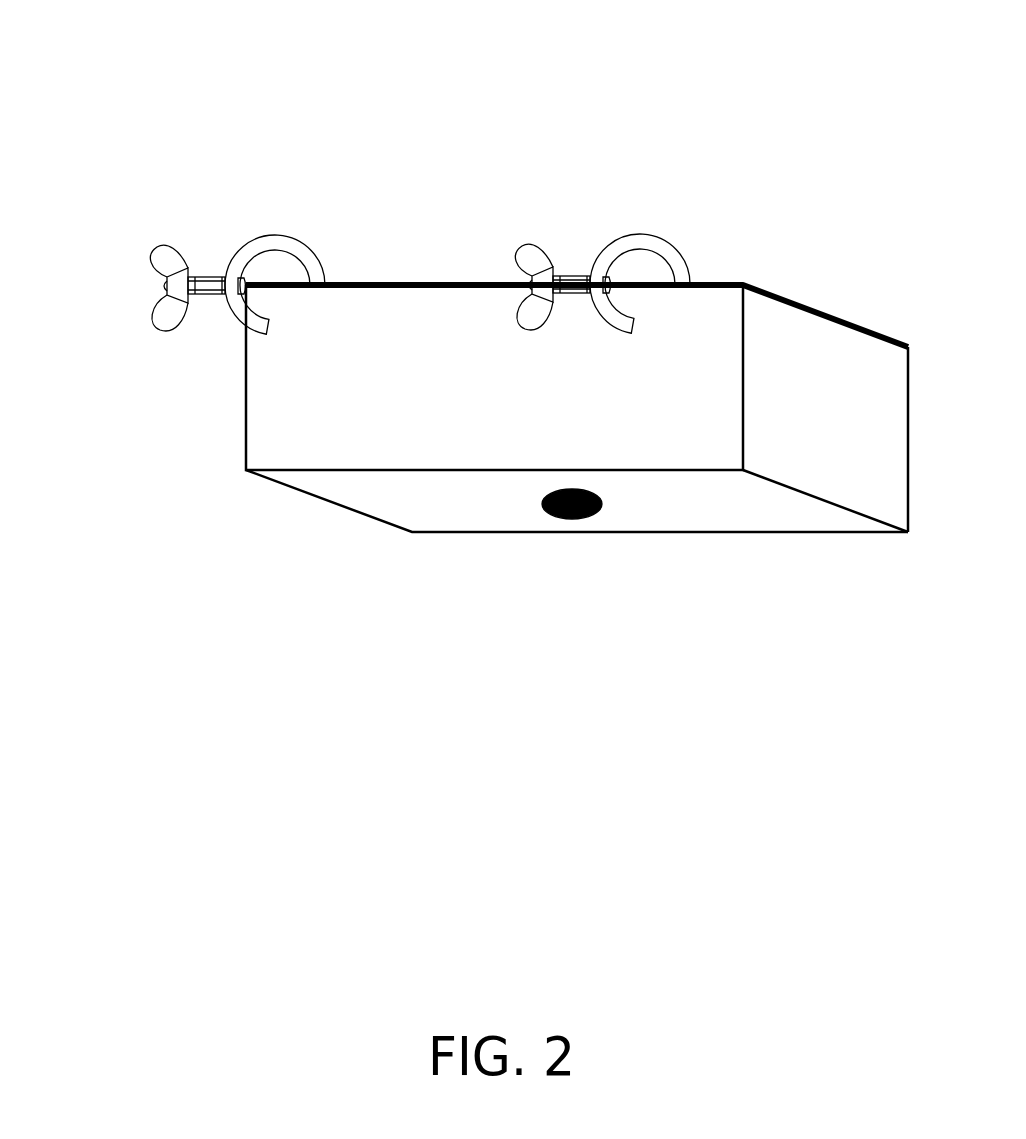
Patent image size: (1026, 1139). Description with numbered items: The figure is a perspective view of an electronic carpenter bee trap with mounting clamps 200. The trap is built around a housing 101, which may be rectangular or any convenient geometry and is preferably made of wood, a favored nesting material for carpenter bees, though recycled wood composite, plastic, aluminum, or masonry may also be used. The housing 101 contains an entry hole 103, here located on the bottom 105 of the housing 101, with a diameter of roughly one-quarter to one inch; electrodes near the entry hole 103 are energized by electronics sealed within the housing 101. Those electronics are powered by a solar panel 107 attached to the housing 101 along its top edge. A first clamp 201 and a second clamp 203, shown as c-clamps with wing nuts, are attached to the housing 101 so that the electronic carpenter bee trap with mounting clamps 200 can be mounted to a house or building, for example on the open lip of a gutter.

The electronic carpenter bee trap with mounting clamps 200 is at (218, 105).
The housing 101 is at (287, 430).
The entry hole 103 is at (580, 517).
The bottom 105 is at (441, 510).
The solar panel 107 is at (490, 281).
The first clamp 201 is at (175, 266).
The second clamp 203 is at (533, 257).